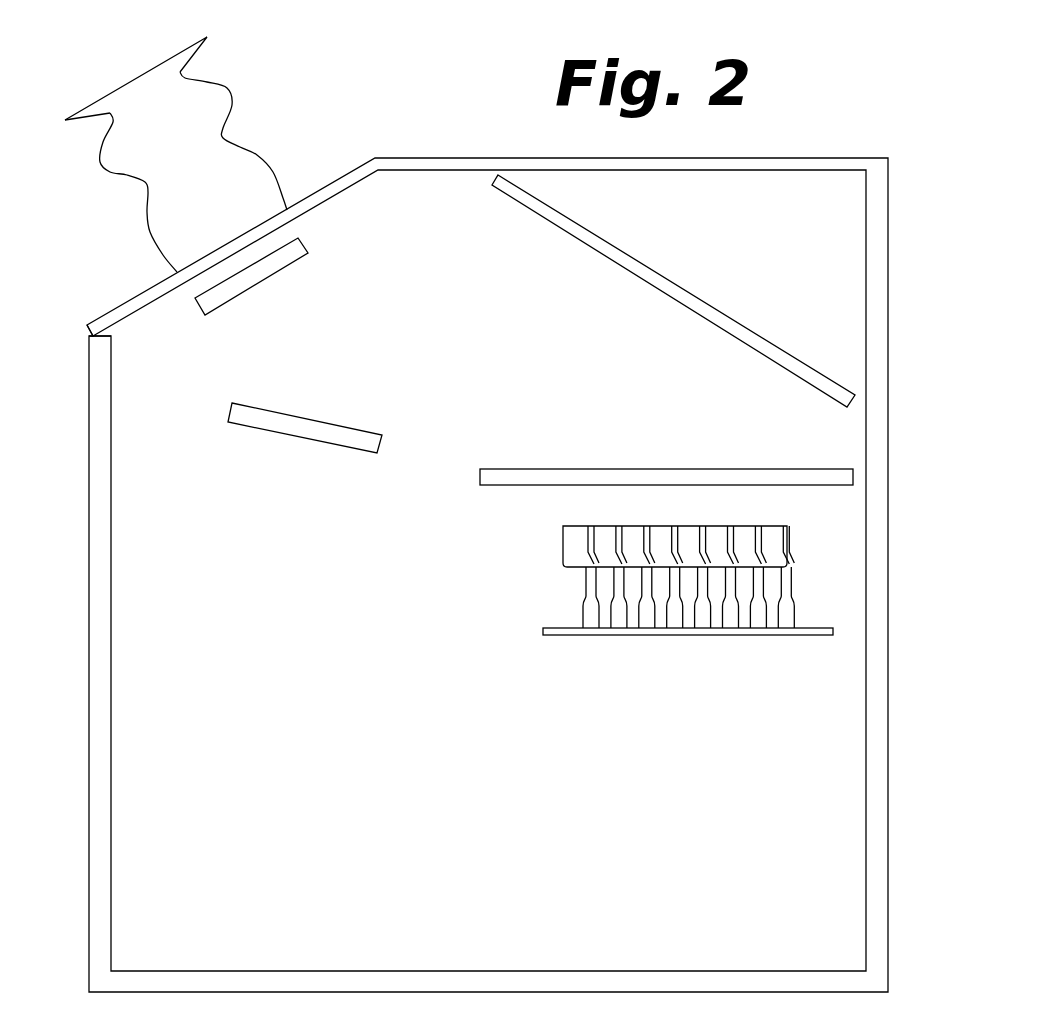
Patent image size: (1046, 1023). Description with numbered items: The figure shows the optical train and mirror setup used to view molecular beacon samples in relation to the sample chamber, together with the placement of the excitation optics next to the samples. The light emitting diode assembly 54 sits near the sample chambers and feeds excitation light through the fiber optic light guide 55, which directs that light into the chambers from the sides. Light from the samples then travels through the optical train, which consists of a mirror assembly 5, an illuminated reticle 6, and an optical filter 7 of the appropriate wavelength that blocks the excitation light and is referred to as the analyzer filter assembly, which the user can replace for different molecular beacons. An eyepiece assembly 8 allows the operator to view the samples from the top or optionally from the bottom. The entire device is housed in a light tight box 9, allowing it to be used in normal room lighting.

The mirror assembly 5 is at (647, 283).
The illuminated reticle 6 is at (600, 468).
The optical filter 7 is at (268, 283).
The eyepiece assembly 8 is at (250, 147).
The light tight box 9 is at (893, 312).
The light emitting diode assembly 54 is at (800, 574).
The fiber optic light guide 55 is at (572, 603).